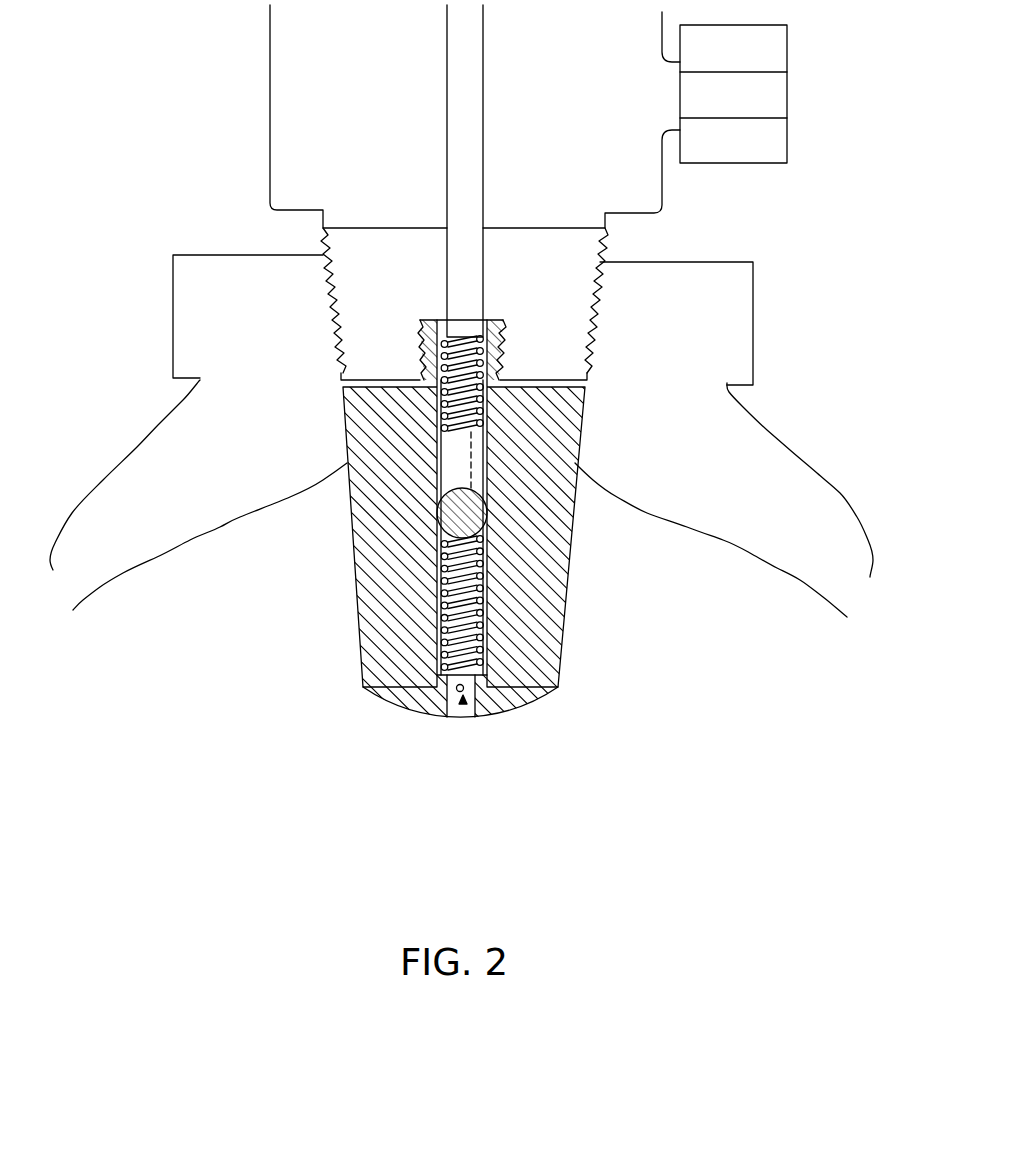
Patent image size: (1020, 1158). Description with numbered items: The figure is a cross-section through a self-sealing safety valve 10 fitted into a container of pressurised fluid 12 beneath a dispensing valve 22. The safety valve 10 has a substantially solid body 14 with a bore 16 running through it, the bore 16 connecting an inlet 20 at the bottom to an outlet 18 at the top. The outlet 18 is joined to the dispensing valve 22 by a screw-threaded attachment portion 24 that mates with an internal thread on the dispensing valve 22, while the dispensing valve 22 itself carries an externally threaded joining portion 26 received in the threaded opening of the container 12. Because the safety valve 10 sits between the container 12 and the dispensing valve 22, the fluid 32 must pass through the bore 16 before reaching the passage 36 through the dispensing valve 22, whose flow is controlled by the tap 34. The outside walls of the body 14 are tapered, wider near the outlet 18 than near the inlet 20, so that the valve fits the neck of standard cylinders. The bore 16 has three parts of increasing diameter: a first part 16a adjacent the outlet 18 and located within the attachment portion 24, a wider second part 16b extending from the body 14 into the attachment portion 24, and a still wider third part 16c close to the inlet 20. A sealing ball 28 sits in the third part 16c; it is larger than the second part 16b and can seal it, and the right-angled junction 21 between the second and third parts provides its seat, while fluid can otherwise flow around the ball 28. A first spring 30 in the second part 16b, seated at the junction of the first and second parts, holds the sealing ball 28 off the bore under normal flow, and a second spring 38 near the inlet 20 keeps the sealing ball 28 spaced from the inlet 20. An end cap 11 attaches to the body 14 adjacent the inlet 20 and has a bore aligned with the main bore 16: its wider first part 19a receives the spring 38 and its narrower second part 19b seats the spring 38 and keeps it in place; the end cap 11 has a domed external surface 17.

The self-sealing safety valve 10 is at (333, 432).
The end cap 11 is at (410, 697).
The container of pressurised fluid 12 is at (195, 316).
The body 14 is at (567, 547).
The bore 16 is at (450, 470).
The first part of the bore 16a is at (503, 325).
The second part of the bore 16b is at (420, 368).
The third part of the bore 16c is at (485, 593).
The domed external surface 17 is at (528, 710).
The outlet 18 is at (463, 327).
The first part of the end cap bore 19a is at (485, 672).
The second part of the end cap bore 19b is at (447, 717).
The inlet 20 is at (466, 717).
The right-angled junction 21 is at (500, 417).
The dispensing valve 22 is at (292, 63).
The screw-threaded attachment portion 24 is at (503, 350).
The joining portion 26 is at (328, 283).
The sealing ball 28 is at (490, 513).
The spring 30 is at (503, 378).
The fluid 32 is at (722, 637).
The tap 34 is at (767, 54).
The passage 36 is at (484, 172).
The spring 38 is at (447, 592).